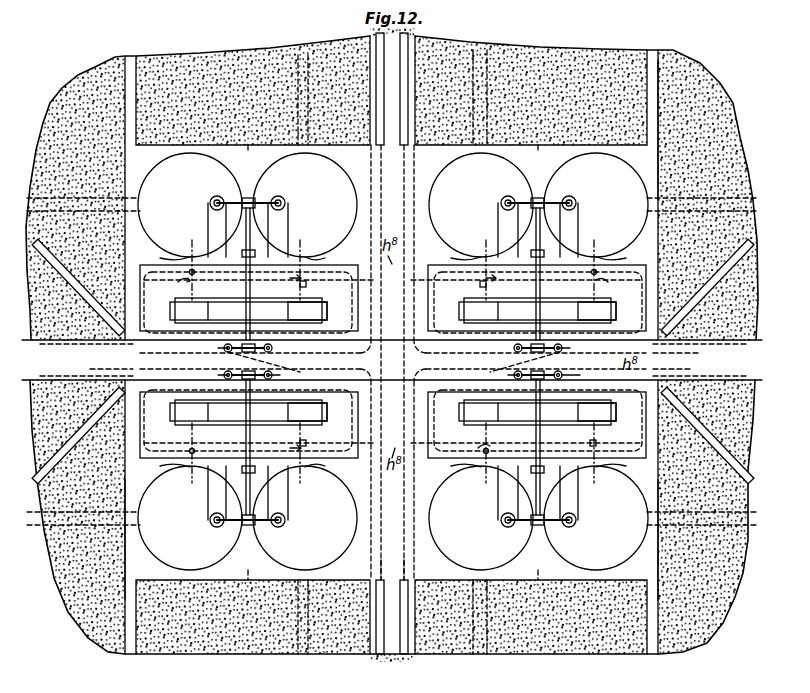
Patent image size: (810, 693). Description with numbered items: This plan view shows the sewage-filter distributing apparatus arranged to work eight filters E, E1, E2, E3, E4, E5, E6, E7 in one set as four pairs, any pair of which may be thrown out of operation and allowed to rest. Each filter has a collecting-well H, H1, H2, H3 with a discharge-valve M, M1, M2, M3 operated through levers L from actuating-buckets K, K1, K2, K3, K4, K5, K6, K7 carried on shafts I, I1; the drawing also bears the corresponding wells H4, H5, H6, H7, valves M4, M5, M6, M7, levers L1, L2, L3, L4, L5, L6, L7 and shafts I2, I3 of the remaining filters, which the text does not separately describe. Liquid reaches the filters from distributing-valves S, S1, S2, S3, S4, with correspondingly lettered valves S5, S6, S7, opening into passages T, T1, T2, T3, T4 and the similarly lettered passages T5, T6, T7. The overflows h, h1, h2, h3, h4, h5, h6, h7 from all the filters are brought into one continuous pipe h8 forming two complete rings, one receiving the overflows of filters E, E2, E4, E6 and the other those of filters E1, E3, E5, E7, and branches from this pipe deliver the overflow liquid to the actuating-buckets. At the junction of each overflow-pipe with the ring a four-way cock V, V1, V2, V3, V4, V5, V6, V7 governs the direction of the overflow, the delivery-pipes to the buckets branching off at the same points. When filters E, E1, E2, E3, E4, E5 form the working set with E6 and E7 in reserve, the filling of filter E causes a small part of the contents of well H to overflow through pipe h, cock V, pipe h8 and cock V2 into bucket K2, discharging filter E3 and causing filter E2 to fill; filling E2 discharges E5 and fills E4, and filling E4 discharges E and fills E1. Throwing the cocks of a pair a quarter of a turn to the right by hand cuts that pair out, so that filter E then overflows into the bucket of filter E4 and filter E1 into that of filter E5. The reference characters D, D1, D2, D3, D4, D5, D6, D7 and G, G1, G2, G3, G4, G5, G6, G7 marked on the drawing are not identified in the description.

The filter E is at (56, 130).
The filter E1 is at (192, 62).
The filter E2 is at (540, 52).
The filter E3 is at (740, 155).
The filter E4 is at (735, 548).
The filter E5 is at (555, 655).
The filter E6 is at (262, 655).
The filter E7 is at (50, 548).
The diagonal duct D is at (36, 242).
The duct D1 is at (376, 80).
The duct D2 is at (410, 80).
The diagonal duct D3 is at (752, 244).
The diagonal duct D4 is at (752, 478).
The duct D5 is at (406, 656).
The duct D6 is at (380, 656).
The diagonal duct D7 is at (36, 480).
The passage T is at (392, 360).
The passage T1 is at (372, 178).
The passage T2 is at (415, 160).
The passage T3 is at (676, 349).
The passage T4 is at (671, 366).
The tunnel T5 is at (412, 568).
The tunnel T6 is at (370, 568).
The tunnel T7 is at (111, 370).
The passage G is at (133, 191).
The passage G1 is at (316, 155).
The passage G2 is at (500, 153).
The passage G3 is at (655, 217).
The passage G4 is at (655, 536).
The passage G5 is at (500, 573).
The passage G6 is at (316, 570).
The passage G7 is at (130, 530).
The collecting-well H is at (190, 205).
The collecting-well H1 is at (305, 205).
The collecting-well H2 is at (481, 205).
The collecting-well H3 is at (596, 205).
The cylinder H4 is at (596, 518).
The cylinder H5 is at (481, 518).
The cylinder H6 is at (305, 518).
The cylinder H7 is at (190, 518).
The discharge-valve M is at (214, 200).
The discharge-valve M1 is at (283, 200).
The discharge-valve M2 is at (503, 200).
The discharge-valve M3 is at (574, 200).
The motor M4 is at (576, 521).
The motor M5 is at (505, 526).
The motor M6 is at (284, 524).
The motor M7 is at (212, 524).
The lever L is at (247, 197).
The link L1 is at (236, 352).
The shaft coupling L2 is at (537, 197).
The link L3 is at (526, 360).
The shaft coupling L4 is at (550, 524).
The shaft coupling L5 is at (548, 368).
The shaft coupling L6 is at (252, 526).
The shaft coupling L7 is at (272, 374).
The shaft I is at (244, 286).
The shaft I1 is at (534, 286).
The shaft I2 is at (630, 432).
The shaft I3 is at (244, 436).
The overflow-pipe h is at (167, 257).
The overflow-pipe h1 is at (324, 253).
The overflow-pipe h2 is at (454, 256).
The overflow-pipe h3 is at (619, 254).
The overflow-pipe h4 is at (614, 464).
The overflow-pipe h5 is at (453, 466).
The overflow-pipe h6 is at (324, 466).
The overflow-pipe h7 is at (166, 466).
The continuous pipe h8 is at (141, 306).
The actuating-bucket K is at (249, 299).
The actuating-bucket K1 is at (307, 311).
The actuating-bucket K2 is at (537, 286).
The actuating-bucket K3 is at (597, 311).
The actuating-bucket K4 is at (597, 411).
The actuating-bucket K5 is at (537, 436).
The actuating-bucket K6 is at (307, 411).
The actuating-bucket K7 is at (249, 436).
The four-way cock V is at (259, 282).
The four-way cock V1 is at (289, 284).
The four-way cock V2 is at (526, 285).
The four-way cock V3 is at (584, 283).
The four-way cock V4 is at (597, 443).
The four-way cock V5 is at (482, 446).
The four-way cock V6 is at (289, 450).
The four-way cock V7 is at (190, 449).
The distributing-valve S is at (270, 345).
The distributing-valve S1 is at (224, 348).
The distributing-valve S2 is at (572, 346).
The distributing-valve S3 is at (516, 345).
The distributing-valve S4 is at (514, 377).
The switch S5 is at (580, 372).
The switch S6 is at (224, 375).
The switch S7 is at (274, 378).